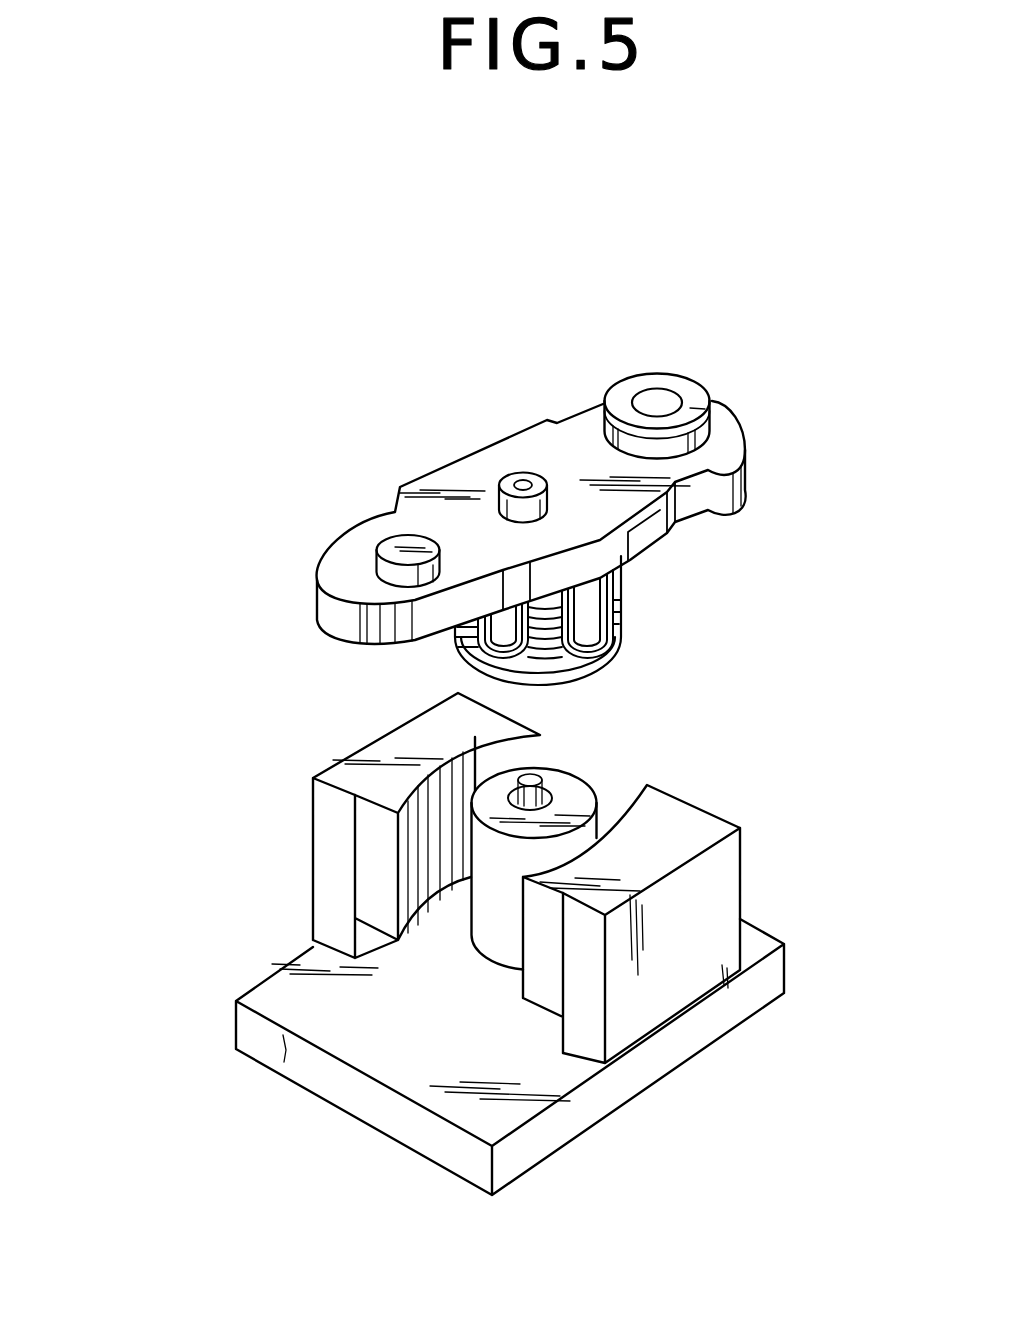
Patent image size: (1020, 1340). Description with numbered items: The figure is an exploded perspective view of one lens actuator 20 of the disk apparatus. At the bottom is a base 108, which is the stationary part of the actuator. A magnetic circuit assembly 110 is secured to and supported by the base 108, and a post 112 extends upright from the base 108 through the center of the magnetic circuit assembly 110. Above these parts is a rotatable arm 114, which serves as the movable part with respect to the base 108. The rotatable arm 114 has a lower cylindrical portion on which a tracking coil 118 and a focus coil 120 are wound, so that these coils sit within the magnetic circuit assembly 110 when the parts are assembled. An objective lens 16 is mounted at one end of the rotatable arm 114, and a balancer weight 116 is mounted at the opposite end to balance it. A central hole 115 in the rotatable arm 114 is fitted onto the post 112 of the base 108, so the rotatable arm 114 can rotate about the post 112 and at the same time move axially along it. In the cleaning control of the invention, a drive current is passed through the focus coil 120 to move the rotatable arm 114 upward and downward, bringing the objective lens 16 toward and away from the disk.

The stepping motor 20 is at (335, 743).
The objective lens 16 is at (660, 405).
The base 108 is at (681, 1042).
The magnetic circuit assembly 110 is at (673, 937).
The post 112 is at (540, 780).
The rotatable arm 114 is at (447, 460).
The central hole 115 is at (527, 483).
The balancer weight 116 is at (392, 552).
The tracking coil 118 is at (597, 655).
The focus coil 120 is at (620, 600).